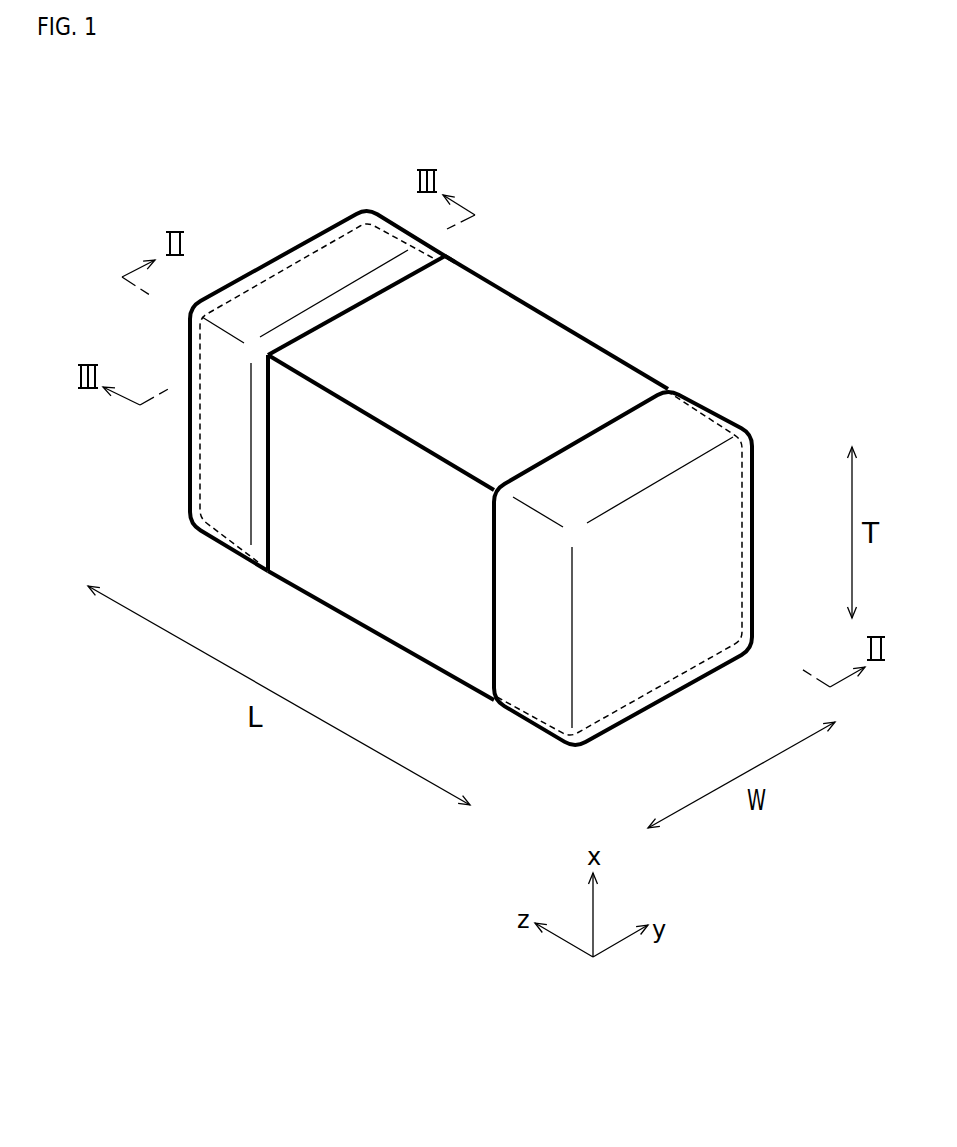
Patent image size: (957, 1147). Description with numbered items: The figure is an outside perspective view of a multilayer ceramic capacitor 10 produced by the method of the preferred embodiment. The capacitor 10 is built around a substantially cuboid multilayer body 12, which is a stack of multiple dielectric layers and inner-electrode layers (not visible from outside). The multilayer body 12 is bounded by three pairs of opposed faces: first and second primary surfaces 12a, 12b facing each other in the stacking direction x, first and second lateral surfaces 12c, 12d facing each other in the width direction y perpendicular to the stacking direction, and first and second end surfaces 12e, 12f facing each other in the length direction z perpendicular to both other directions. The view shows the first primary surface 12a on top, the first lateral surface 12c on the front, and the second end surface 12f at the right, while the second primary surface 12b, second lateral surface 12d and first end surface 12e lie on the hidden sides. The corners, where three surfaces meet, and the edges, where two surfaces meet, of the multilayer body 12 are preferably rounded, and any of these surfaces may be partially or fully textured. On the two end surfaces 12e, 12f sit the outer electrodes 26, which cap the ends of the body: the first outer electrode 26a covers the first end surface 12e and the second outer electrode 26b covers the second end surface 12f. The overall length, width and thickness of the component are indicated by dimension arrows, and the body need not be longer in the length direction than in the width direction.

The multilayer ceramic capacitor 10 is at (123, 179).
The multilayer body 12 is at (603, 355).
The first primary surface 12a is at (553, 355).
The second primary surface 12b is at (348, 594).
The first lateral surface 12c is at (418, 618).
The second lateral surface 12d is at (505, 328).
The first end surface 12e is at (298, 275).
The second end surface 12f is at (707, 530).
The outer electrodes 26 is at (308, 878).
The first outer electrode 26a is at (388, 213).
The second outer electrode 26b is at (710, 400).